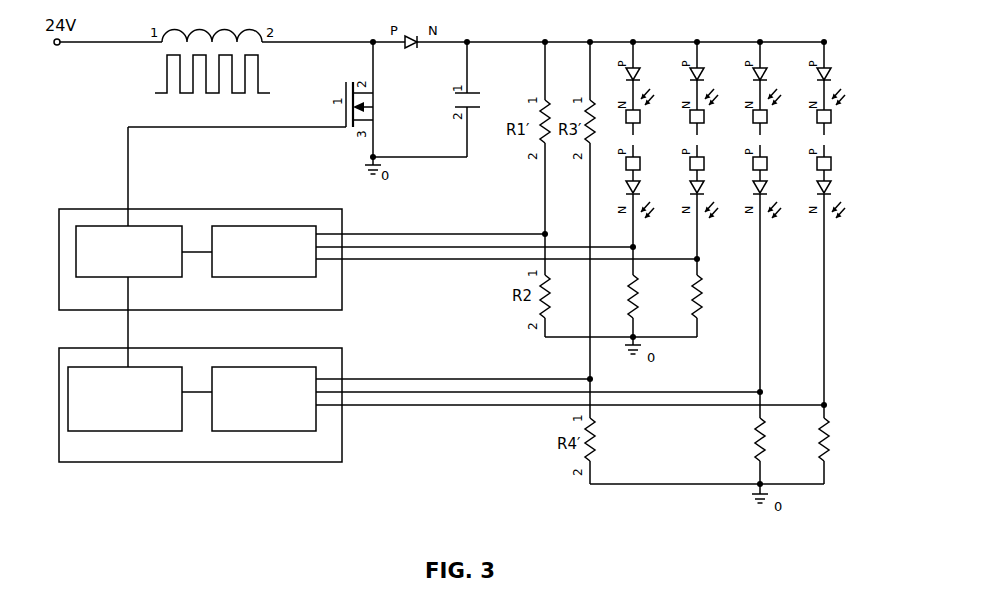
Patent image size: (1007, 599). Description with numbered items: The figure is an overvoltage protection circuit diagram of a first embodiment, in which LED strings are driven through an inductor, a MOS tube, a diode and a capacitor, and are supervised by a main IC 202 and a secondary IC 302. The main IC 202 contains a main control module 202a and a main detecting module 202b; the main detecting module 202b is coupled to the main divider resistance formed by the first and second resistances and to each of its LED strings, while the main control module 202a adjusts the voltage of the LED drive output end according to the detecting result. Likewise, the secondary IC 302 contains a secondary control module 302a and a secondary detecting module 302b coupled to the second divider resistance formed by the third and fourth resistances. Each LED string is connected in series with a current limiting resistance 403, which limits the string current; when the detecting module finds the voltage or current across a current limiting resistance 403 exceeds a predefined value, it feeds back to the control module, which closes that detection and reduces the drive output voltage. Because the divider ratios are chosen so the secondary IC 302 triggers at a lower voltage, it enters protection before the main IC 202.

The main IC 202 is at (200, 259).
The main control module 202a is at (129, 251).
The main detecting module 202b is at (264, 251).
The secondary IC 302 is at (200, 405).
The secondary control module 302a is at (125, 398).
The secondary detecting module 302b is at (264, 399).
The current limiting resistance 403 is at (640, 290).